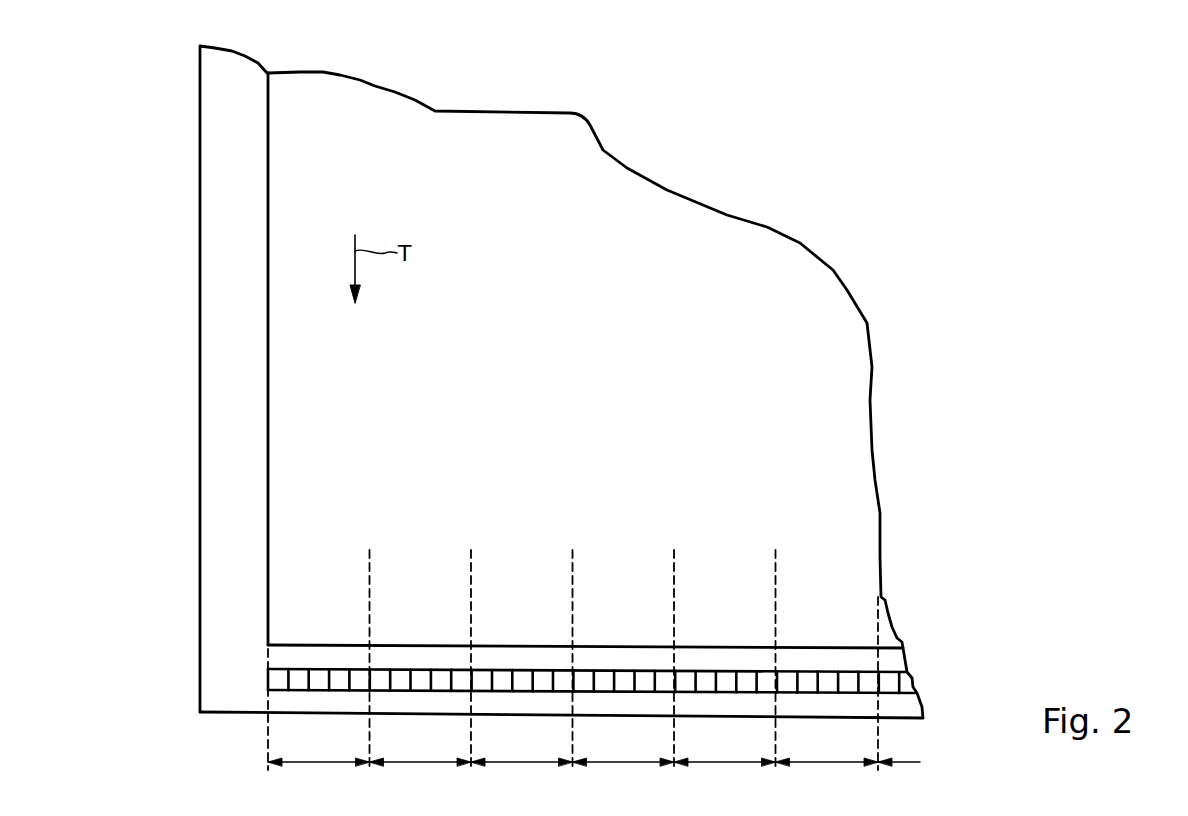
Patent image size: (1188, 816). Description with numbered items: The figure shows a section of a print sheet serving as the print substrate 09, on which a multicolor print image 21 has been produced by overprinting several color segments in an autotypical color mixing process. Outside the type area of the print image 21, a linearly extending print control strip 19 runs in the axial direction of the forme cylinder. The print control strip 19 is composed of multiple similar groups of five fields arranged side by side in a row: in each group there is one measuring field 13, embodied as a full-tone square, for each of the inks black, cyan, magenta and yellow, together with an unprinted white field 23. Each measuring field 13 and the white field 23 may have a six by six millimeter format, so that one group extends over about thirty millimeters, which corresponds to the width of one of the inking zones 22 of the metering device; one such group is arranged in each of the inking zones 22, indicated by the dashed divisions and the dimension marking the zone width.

The print substrate 09 is at (222, 295).
The multicolor print image 21 is at (583, 373).
The inking zone 22 is at (434, 573).
The print control strip 19 is at (258, 682).
The measuring field 13 is at (339, 674).
The white field 23 is at (362, 674).